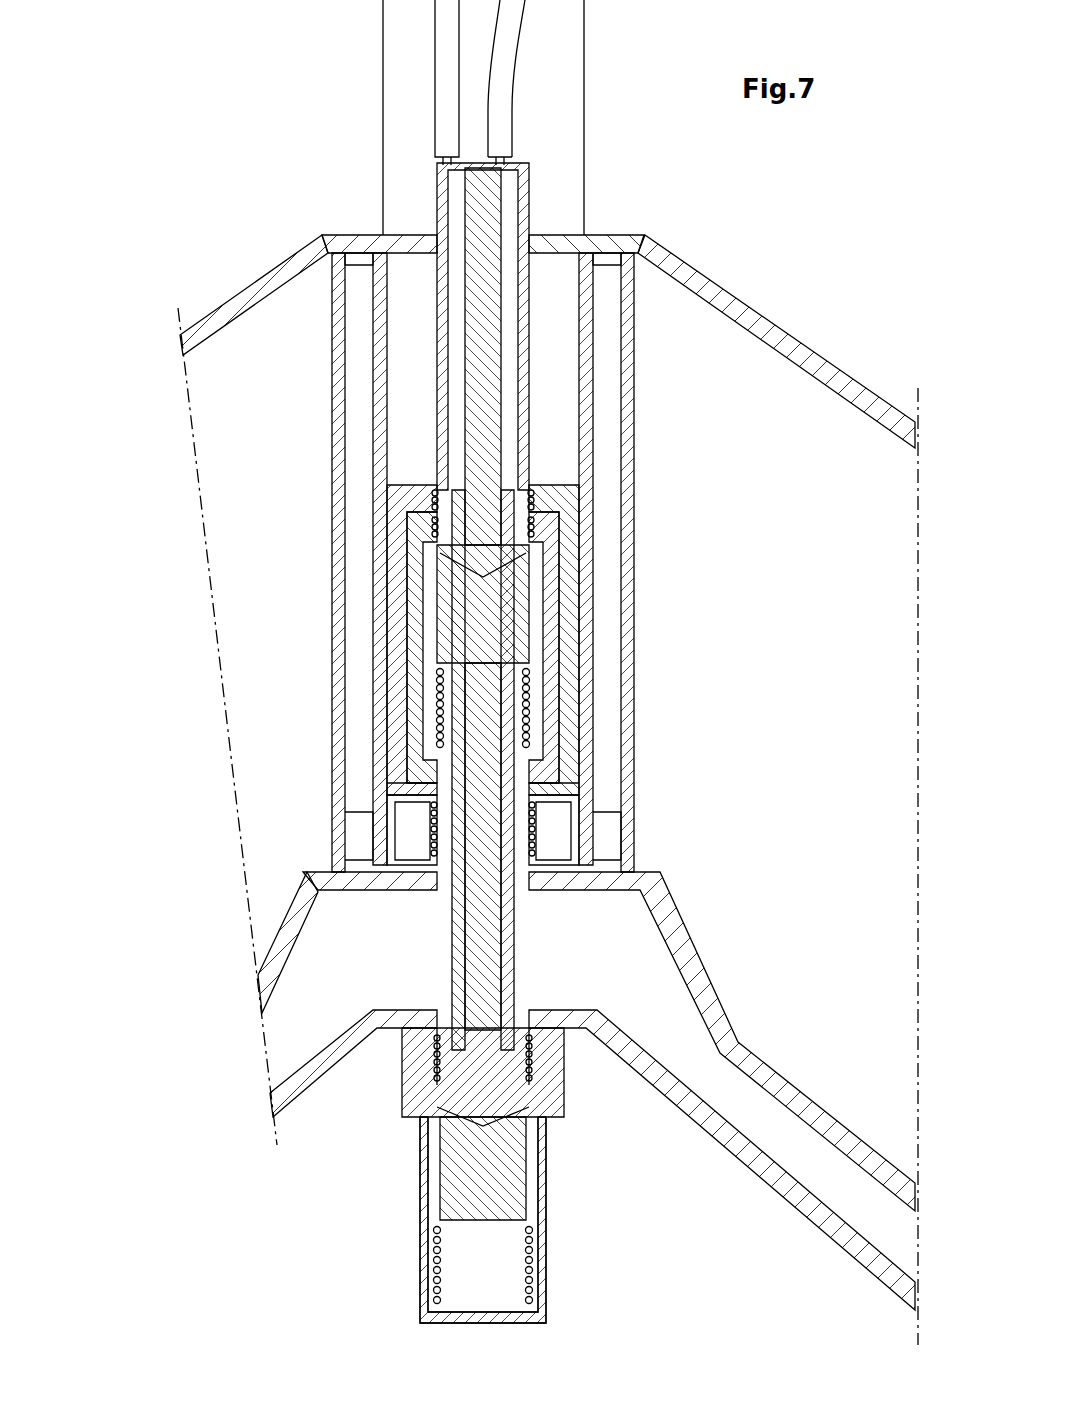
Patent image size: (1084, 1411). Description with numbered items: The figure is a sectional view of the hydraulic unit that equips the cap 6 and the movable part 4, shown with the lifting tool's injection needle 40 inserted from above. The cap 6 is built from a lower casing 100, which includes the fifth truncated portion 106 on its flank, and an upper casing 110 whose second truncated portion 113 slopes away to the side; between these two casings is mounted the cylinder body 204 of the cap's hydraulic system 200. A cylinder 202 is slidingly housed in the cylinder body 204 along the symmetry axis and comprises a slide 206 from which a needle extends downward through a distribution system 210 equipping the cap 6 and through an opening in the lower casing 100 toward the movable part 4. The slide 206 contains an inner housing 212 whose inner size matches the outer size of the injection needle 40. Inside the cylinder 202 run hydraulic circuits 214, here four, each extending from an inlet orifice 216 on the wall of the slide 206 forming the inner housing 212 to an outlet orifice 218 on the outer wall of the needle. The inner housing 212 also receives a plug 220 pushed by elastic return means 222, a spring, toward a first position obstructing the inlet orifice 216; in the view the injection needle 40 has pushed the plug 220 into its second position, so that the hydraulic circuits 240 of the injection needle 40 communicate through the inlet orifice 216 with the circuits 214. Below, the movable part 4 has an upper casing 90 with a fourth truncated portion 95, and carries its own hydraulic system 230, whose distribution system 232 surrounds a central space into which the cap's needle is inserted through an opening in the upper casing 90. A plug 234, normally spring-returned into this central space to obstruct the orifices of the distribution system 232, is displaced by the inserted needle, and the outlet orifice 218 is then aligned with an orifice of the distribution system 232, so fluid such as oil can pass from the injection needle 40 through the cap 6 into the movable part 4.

The movable part 4 is at (665, 1250).
The cap 6 is at (812, 494).
The injection needle 40 is at (520, 178).
The upper casing 90 is at (262, 1120).
The fourth truncated portion 95 is at (765, 1160).
The lower casing 100 is at (712, 960).
The fifth truncated portion 106 is at (290, 945).
The upper casing 110 is at (183, 342).
The second truncated portion 113 is at (760, 325).
The hydraulic system 200 is at (365, 650).
The cylinder 202 is at (590, 770).
The cylinder body 204 is at (380, 405).
The slide 206 is at (570, 633).
The distribution system 210 is at (558, 840).
The inner housing 212 is at (452, 702).
The hydraulic circuit 214 is at (428, 575).
The inlet orifice 216 is at (420, 505).
The outlet orifice 218 is at (432, 1050).
The plug 220 is at (508, 586).
The elastic return means 222 is at (528, 700).
The hydraulic system 230 is at (395, 1200).
The distribution system 232 is at (560, 1082).
The plug 234 is at (525, 1155).
The hydraulic circuit 240 is at (440, 205).